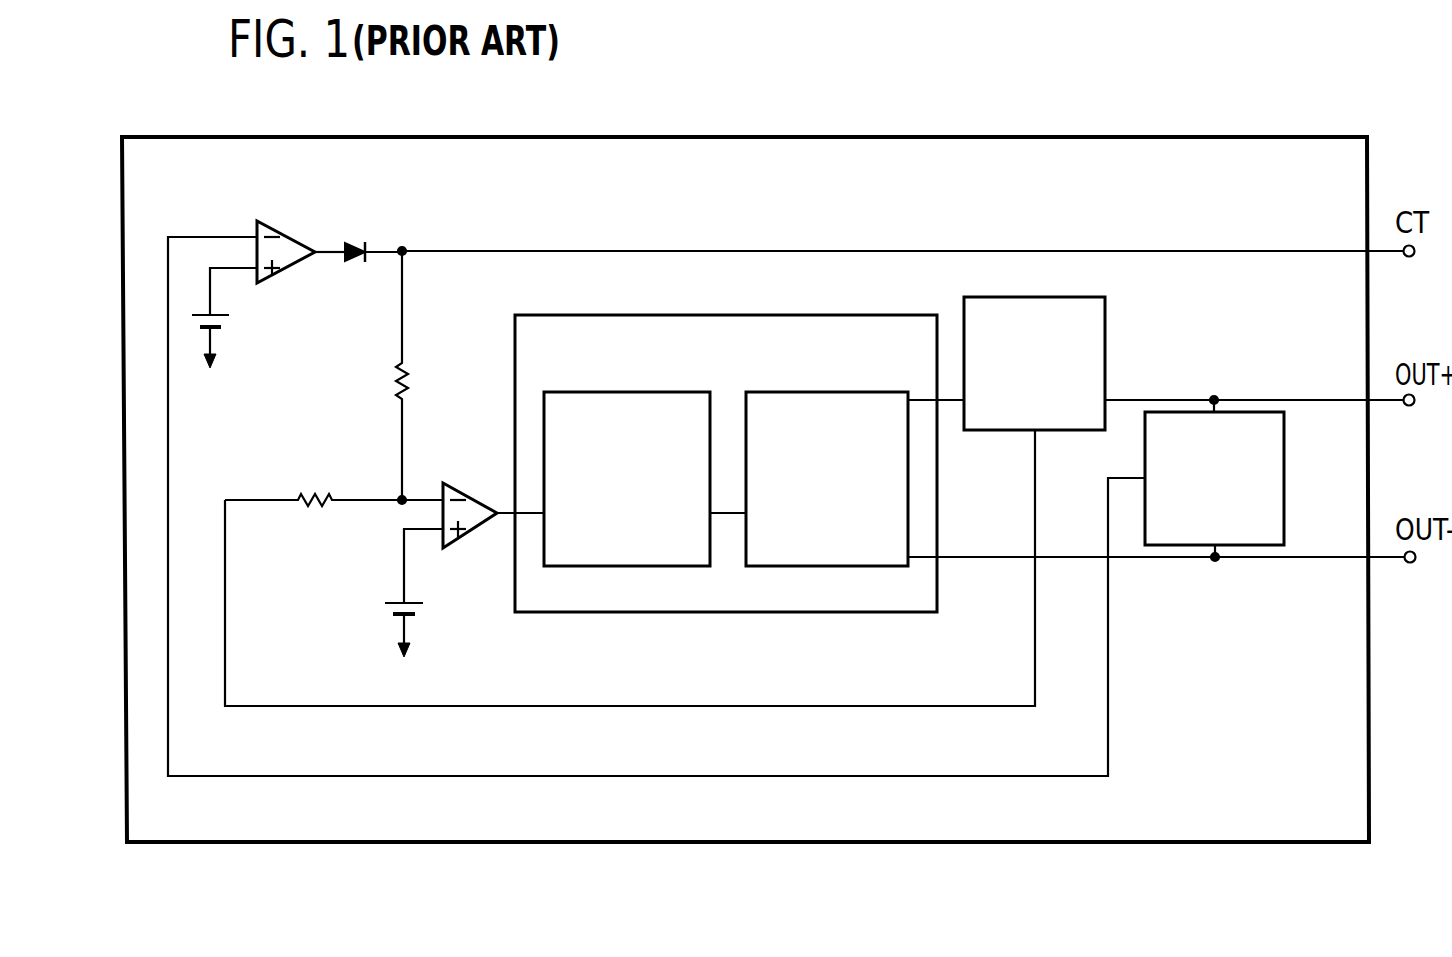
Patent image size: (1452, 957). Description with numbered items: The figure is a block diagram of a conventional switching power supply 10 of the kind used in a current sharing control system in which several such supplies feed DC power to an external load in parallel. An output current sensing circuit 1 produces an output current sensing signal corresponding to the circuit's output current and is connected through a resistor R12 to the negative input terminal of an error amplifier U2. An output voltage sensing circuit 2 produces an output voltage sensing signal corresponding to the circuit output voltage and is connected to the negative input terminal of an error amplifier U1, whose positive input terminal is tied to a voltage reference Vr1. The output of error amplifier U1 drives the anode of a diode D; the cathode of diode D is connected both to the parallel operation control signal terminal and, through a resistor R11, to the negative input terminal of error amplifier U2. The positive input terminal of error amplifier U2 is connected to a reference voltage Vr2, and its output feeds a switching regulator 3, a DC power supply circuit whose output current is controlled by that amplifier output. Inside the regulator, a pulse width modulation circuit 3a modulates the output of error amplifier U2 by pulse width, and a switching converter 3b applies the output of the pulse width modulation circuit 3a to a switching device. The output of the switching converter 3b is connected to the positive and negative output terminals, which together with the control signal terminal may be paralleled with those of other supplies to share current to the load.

The switching power supply 10 is at (574, 137).
The switching regulator 3 is at (862, 291).
The pulse width modulation circuit 3a is at (615, 392).
The switching converter 3b is at (830, 392).
The output current sensing circuit 1 is at (1105, 332).
The output voltage sensing circuit 2 is at (1284, 470).
The error amplifier U1 is at (286, 240).
The error amplifier U2 is at (470, 502).
The diode D is at (354, 234).
The voltage reference Vr1 is at (238, 338).
The reference voltage Vr2 is at (432, 625).
The resistor R11 is at (427, 375).
The resistor R12 is at (334, 485).